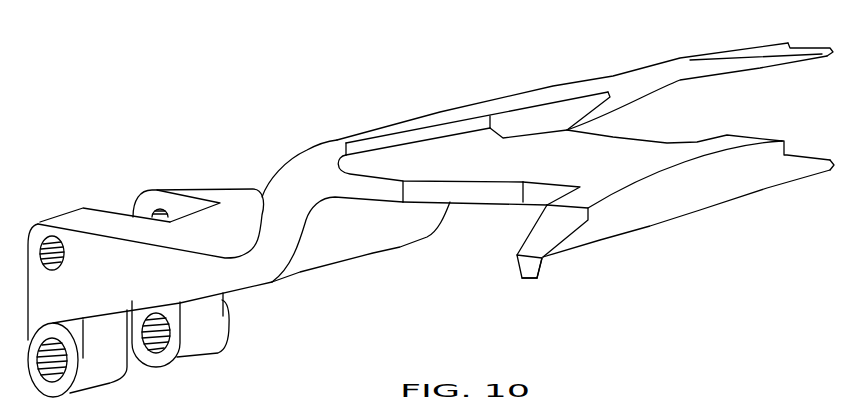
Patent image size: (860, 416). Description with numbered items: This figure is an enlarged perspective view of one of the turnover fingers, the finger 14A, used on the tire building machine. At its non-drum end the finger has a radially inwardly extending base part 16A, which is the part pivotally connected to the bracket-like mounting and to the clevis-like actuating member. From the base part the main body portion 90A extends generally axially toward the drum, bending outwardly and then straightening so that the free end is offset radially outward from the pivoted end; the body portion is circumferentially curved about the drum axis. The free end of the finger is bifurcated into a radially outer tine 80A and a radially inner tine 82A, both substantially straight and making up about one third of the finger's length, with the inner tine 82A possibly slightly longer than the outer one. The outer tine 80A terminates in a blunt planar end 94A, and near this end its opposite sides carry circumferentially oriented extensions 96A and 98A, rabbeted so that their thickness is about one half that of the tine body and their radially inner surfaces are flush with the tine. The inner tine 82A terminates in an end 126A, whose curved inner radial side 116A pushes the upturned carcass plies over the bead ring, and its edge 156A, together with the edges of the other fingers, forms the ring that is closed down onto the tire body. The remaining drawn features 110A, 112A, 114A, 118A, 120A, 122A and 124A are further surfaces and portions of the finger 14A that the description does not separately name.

The turnover finger 14A is at (212, 180).
The base part 16A is at (109, 284).
The outer tine 80A is at (452, 104).
The inner tine 82A is at (382, 205).
The main body portion 90A is at (304, 153).
The planar end 94A is at (707, 65).
The circumferential extension 96A is at (505, 139).
The circumferential extension 98A is at (807, 45).
The tongue 110A is at (538, 232).
The tip 112A is at (818, 172).
The slot 114A is at (437, 170).
The curved inner radial side 116A is at (539, 277).
The wedge 118A is at (553, 190).
The web surface 120A is at (613, 136).
The tab face 122A is at (518, 259).
The step 124A is at (703, 139).
The end of inner tine 126A is at (645, 216).
The edge 156A is at (522, 280).